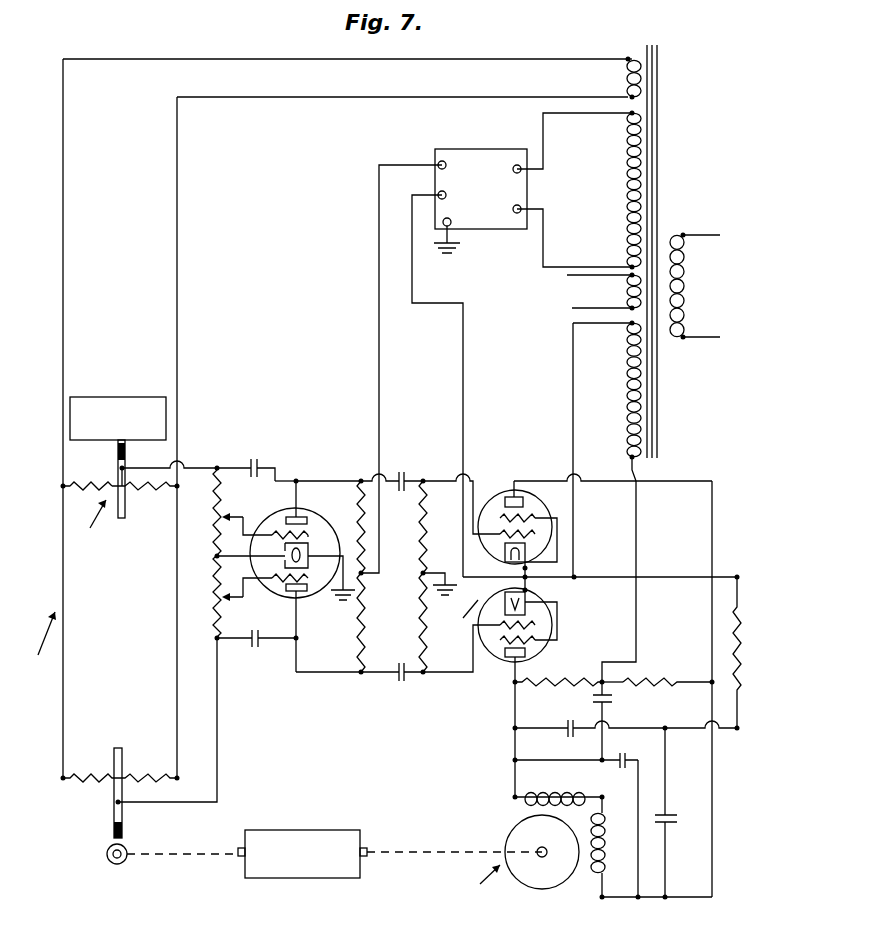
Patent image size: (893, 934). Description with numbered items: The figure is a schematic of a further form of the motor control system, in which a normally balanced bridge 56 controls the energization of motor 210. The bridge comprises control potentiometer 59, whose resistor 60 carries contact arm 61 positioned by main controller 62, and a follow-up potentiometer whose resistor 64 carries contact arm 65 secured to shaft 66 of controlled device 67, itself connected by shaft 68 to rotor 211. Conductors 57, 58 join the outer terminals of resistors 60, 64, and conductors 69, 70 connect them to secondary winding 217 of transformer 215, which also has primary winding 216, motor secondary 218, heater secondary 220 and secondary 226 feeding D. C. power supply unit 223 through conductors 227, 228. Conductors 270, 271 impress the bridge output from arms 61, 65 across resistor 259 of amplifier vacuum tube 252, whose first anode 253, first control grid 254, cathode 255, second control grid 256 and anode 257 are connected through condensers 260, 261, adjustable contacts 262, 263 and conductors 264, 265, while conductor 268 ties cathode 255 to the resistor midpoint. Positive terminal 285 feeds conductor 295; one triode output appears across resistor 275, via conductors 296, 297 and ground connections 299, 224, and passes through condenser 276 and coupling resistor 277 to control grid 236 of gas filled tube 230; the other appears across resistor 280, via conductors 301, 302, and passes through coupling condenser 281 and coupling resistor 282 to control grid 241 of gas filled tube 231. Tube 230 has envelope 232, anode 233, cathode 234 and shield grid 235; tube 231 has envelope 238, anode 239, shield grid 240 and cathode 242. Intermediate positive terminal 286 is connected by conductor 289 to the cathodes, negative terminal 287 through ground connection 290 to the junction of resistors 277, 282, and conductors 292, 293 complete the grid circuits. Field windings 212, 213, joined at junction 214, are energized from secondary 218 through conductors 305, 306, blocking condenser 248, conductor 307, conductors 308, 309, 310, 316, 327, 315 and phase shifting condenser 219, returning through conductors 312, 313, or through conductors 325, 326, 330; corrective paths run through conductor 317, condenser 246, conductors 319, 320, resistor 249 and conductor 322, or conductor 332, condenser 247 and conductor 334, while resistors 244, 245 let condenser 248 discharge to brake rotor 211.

The bridge 56 is at (37, 641).
The conductor 57 is at (66, 588).
The conductor 58 is at (175, 622).
The control potentiometer 59 is at (91, 520).
The resistor 60 is at (98, 482).
The contact arm 61 is at (125, 506).
The main controller 62 is at (106, 397).
The resistor 64 is at (82, 776).
The contact arm 65 is at (124, 760).
The shaft 66 is at (178, 851).
The controlled device 67 is at (333, 829).
The shaft 68 is at (400, 851).
The conductor 69 is at (243, 58).
The conductor 70 is at (298, 97).
The motor 210 is at (480, 880).
The rotor 211 is at (523, 875).
The field winding 212 is at (606, 850).
The field winding 213 is at (556, 792).
The junction 214 is at (604, 797).
The transformer 215 is at (672, 215).
The primary winding 216 is at (686, 268).
The secondary winding 217 is at (628, 60).
The secondary winding 218 is at (627, 370).
The condenser 219 is at (629, 766).
The secondary winding 220 is at (627, 290).
The D. C. power supply unit 223 is at (474, 198).
The ground connection 224 is at (462, 240).
The secondary winding 226 is at (627, 192).
The conductor 227 is at (545, 140).
The conductor 228 is at (548, 240).
The gas filled tube 230 is at (488, 490).
The gas filled tube 231 is at (460, 614).
The gas filled envelope 232 is at (540, 510).
The anode 233 is at (520, 496).
The cathode 234 is at (527, 551).
The shield grid 235 is at (527, 516).
The control grid 236 is at (500, 540).
The gas filled envelope 238 is at (552, 618).
The anode 239 is at (528, 656).
The shield grid 240 is at (538, 646).
The control grid 241 is at (500, 630).
The cathode 242 is at (528, 605).
The resistor 244 is at (556, 686).
The resistor 245 is at (655, 680).
The condenser 246 is at (566, 734).
The condenser 247 is at (676, 824).
The condenser 248 is at (608, 705).
The resistor 249 is at (743, 640).
The vacuum tube 252 is at (318, 498).
The first anode 253 is at (304, 510).
The first control grid 254 is at (312, 531).
The cathode 255 is at (310, 548).
The second control grid 256 is at (283, 583).
The anode 257 is at (300, 594).
The resistor 259 is at (222, 497).
The condenser 260 is at (254, 458).
The condenser 261 is at (260, 648).
The adjustable contact 262 is at (222, 520).
The adjustable contact 263 is at (214, 590).
The conductor 264 is at (252, 530).
The conductor 265 is at (232, 600).
The conductor 268 is at (215, 556).
The conductor 270 is at (200, 467).
The conductor 271 is at (219, 766).
The resistor 275 is at (368, 527).
The condenser 276 is at (412, 470).
The coupling resistor 277 is at (419, 549).
The resistor 280 is at (368, 615).
The coupling condenser 281 is at (397, 680).
The coupling resistor 282 is at (429, 650).
The positive terminal 285 is at (446, 162).
The intermediate positive terminal 286 is at (446, 192).
The negative terminal 287 is at (452, 221).
The conductor 289 is at (465, 358).
The ground connection 290 is at (444, 573).
The conductor 292 is at (468, 478).
The conductor 293 is at (460, 674).
The conductor 295 is at (378, 324).
The conductor 296 is at (355, 479).
The conductor 297 is at (298, 480).
The ground connection 299 is at (331, 595).
The conductor 301 is at (325, 671).
The conductor 302 is at (296, 624).
The conductor 305 is at (638, 619).
The conductor 306 is at (612, 689).
The conductor 307 is at (604, 740).
The conductor 308 is at (513, 780).
The conductor 309 is at (513, 750).
The conductor 310 is at (513, 716).
The conductor 312 is at (562, 577).
The conductor 313 is at (575, 432).
The conductor 315 is at (617, 805).
The conductor 316 is at (560, 760).
The conductor 317 is at (535, 727).
The conductor 319 is at (668, 727).
The conductor 320 is at (670, 735).
The conductor 322 is at (672, 577).
The conductor 325 is at (714, 797).
The conductor 326 is at (648, 898).
The conductor 327 is at (615, 898).
The conductor 330 is at (714, 540).
The conductor 332 is at (667, 860).
The conductor 334 is at (667, 777).